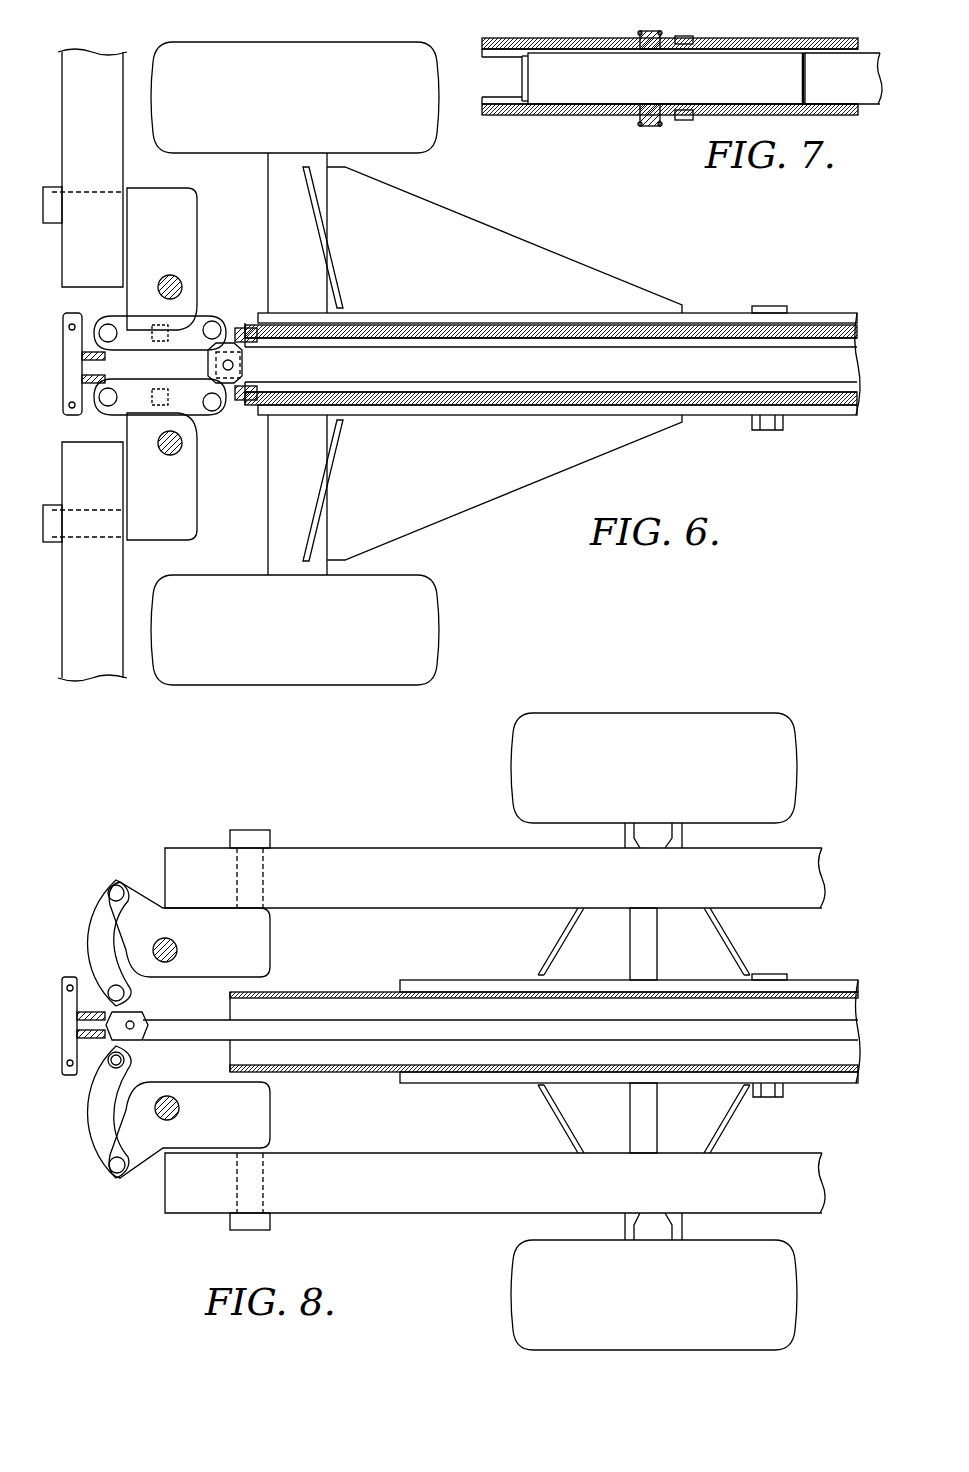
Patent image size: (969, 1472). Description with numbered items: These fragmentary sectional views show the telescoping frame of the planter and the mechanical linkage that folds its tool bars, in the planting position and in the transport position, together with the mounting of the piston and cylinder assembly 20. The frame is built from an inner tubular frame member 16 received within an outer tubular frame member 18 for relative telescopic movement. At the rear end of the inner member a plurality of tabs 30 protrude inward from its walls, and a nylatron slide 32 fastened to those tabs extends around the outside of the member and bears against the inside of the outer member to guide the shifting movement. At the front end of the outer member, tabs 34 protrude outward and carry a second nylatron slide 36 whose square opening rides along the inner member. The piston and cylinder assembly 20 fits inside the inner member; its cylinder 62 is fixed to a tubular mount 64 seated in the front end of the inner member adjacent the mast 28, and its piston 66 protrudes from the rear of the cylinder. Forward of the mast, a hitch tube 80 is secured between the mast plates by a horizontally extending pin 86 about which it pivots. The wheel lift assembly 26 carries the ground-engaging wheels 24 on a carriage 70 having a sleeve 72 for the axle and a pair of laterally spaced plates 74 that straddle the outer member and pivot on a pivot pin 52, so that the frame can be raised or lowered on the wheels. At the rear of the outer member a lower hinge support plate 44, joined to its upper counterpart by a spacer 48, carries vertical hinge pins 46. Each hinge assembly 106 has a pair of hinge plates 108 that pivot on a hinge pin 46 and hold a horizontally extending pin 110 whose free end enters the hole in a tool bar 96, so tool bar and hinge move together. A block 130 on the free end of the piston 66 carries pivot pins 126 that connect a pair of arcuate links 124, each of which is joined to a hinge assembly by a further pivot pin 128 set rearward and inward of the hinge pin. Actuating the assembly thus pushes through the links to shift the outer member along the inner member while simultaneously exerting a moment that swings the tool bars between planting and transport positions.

In FIG. 7, the inner tubular frame member 16 is at (538, 110).
In FIG. 6, the inner tubular frame member 16 is at (645, 340).
In FIG. 7, the outer tubular frame member 18 is at (604, 118).
In FIG. 6, the outer tubular frame member 18 is at (592, 333).
In FIG. 8, the outer tubular frame member 18 is at (383, 986).
In FIG. 6, the piston and cylinder assembly 20 is at (458, 385).
In FIG. 8, the piston and cylinder assembly 20 is at (348, 1010).
In FIG. 6, the ground-engaging wheels 24 is at (358, 48).
In FIG. 8, the ground-engaging wheels 24 is at (698, 727).
In FIG. 6, the wheel lift assembly 26 is at (474, 516).
In FIG. 7, the mast 28 is at (770, 40).
In FIG. 6, the tabs 30 is at (262, 392).
In FIG. 6, the nylatron slide 32 is at (247, 330).
In FIG. 7, the tabs 34 is at (645, 31).
In FIG. 7, the nylatron slide 36 is at (672, 36).
In FIG. 6, the lower hinge support plate 44 is at (90, 325).
In FIG. 8, the lower hinge support plate 44 is at (88, 1068).
In FIG. 6, the hinge pin 46 is at (165, 278).
In FIG. 8, the hinge pin 46 is at (178, 948).
In FIG. 6, the spacer 48 is at (63, 367).
In FIG. 8, the spacer 48 is at (66, 1042).
In FIG. 6, the pivot pin 52 is at (772, 308).
In FIG. 8, the pivot pin 52 is at (770, 1097).
In FIG. 7, the cylinder 62 is at (486, 86).
In FIG. 6, the cylinder 62 is at (801, 372).
In FIG. 7, the tubular mount 64 is at (568, 96).
In FIG. 6, the piston 66 is at (246, 362).
In FIG. 8, the piston 66 is at (440, 1035).
In FIG. 6, the carriage 70 is at (562, 248).
In FIG. 8, the carriage 70 is at (752, 953).
In FIG. 6, the sleeve 72 is at (322, 177).
In FIG. 8, the sleeve 72 is at (641, 1233).
In FIG. 6, the plates 74 is at (455, 320).
In FIG. 8, the plates 74 is at (695, 980).
In FIG. 7, the hitch tube 80 is at (866, 94).
In FIG. 7, the pin 86 is at (684, 122).
In FIG. 6, the tool bar 96 is at (85, 57).
In FIG. 8, the tool bar 96 is at (412, 848).
In FIG. 6, the hinge assembly 106 is at (152, 178).
In FIG. 8, the hinge assembly 106 is at (282, 935).
In FIG. 6, the hinge plates 108 is at (180, 200).
In FIG. 8, the hinge plates 108 is at (258, 960).
In FIG. 6, the horizontally extending pin 110 is at (82, 190).
In FIG. 8, the horizontally extending pin 110 is at (268, 868).
In FIG. 6, the links 124 is at (147, 328).
In FIG. 8, the links 124 is at (100, 926).
In FIG. 6, the pivot pin 126 is at (215, 325).
In FIG. 8, the pivot pin 126 is at (110, 988).
In FIG. 6, the pivot pin 128 is at (108, 326).
In FIG. 8, the pivot pin 128 is at (118, 885).
In FIG. 6, the block 130 is at (128, 412).
In FIG. 8, the block 130 is at (133, 1012).